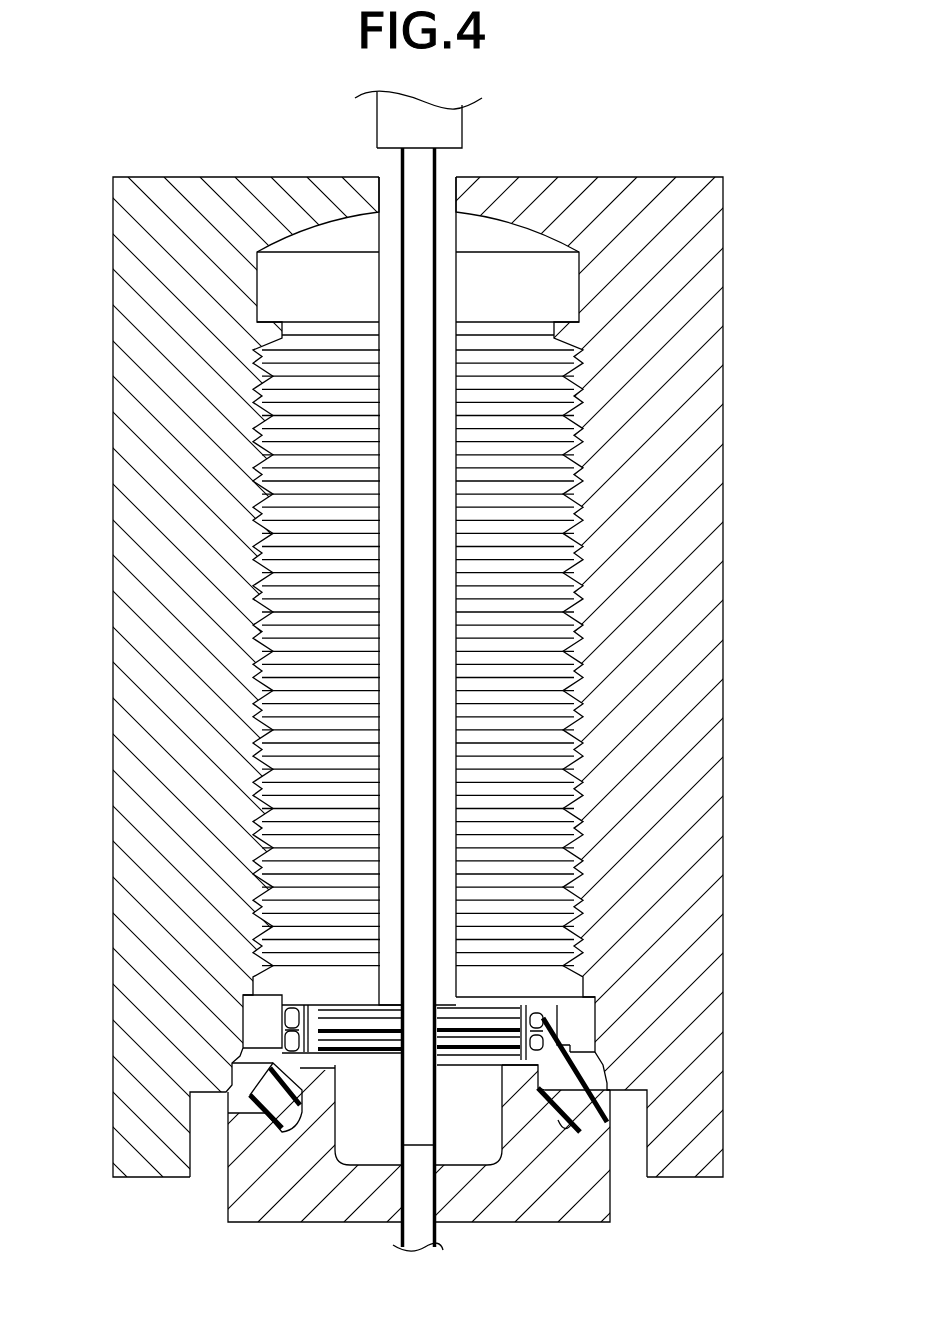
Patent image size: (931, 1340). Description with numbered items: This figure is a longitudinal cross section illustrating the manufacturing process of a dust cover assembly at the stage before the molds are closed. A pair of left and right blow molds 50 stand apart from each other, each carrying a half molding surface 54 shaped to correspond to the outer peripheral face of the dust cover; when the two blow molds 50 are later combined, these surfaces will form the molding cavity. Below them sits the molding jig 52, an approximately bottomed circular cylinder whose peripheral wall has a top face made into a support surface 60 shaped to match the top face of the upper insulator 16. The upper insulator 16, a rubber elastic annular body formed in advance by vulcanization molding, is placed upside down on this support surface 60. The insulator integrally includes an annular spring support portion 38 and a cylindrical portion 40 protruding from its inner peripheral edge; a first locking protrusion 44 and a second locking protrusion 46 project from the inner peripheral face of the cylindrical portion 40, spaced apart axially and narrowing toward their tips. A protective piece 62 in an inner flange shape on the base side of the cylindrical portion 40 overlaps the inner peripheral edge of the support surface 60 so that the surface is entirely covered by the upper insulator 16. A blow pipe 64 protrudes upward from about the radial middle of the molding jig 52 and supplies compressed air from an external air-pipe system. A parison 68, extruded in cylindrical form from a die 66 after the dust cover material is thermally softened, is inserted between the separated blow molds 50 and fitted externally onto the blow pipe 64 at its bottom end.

The upper insulator 16 is at (567, 1046).
The spring support portion 38 is at (600, 1116).
The cylindrical portion 40 is at (290, 1032).
The first locking protrusion 44 is at (293, 1043).
The second locking protrusion 46 is at (293, 1018).
The blow mold 50 is at (685, 437).
The molding jig 52 is at (263, 1172).
The half molding surface 54 is at (267, 450).
The support surface 60 is at (557, 1125).
The protective piece 62 is at (515, 1063).
The blow pipe 64 is at (418, 1177).
The die 66 is at (443, 127).
The parison 68 is at (402, 233).